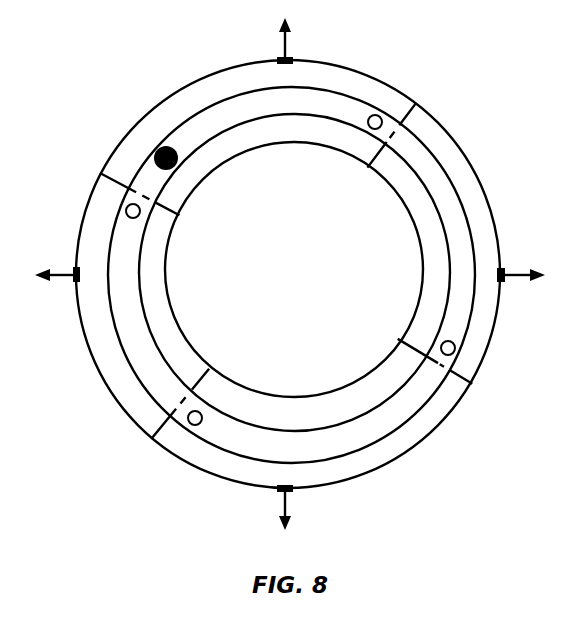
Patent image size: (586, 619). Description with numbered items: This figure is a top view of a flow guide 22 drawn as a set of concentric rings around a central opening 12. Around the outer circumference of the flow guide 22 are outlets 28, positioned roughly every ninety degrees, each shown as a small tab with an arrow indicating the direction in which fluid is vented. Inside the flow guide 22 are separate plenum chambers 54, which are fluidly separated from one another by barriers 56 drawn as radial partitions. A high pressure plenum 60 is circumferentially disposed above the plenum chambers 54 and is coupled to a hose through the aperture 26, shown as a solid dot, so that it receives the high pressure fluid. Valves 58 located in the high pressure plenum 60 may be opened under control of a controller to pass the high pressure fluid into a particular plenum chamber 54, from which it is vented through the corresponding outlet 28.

The central bore 12 is at (300, 274).
The flow guide 22 is at (474, 170).
The aperture 26 is at (157, 147).
The outlets 28 is at (294, 60).
The plenum chambers 54 is at (352, 72).
The barriers 56 is at (110, 182).
The valves 58 is at (125, 210).
The high pressure plenum 60 is at (468, 287).